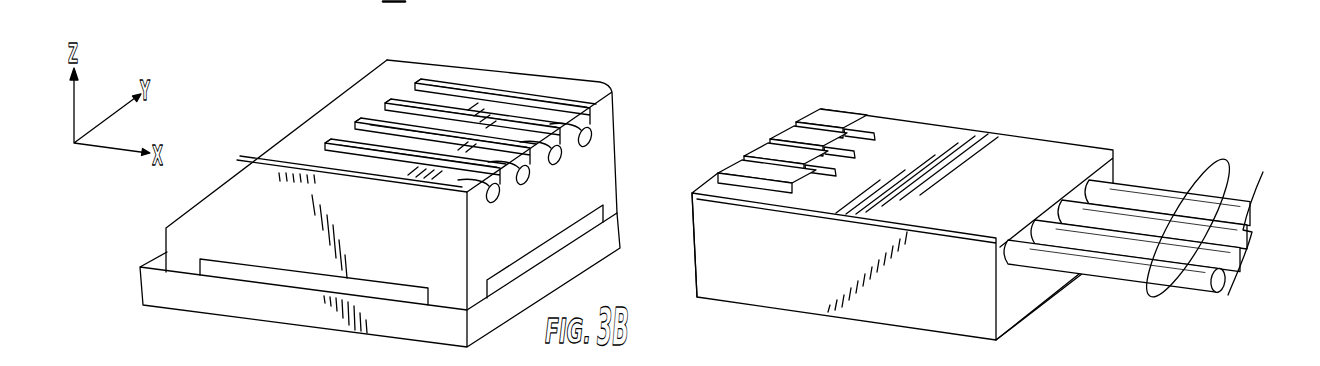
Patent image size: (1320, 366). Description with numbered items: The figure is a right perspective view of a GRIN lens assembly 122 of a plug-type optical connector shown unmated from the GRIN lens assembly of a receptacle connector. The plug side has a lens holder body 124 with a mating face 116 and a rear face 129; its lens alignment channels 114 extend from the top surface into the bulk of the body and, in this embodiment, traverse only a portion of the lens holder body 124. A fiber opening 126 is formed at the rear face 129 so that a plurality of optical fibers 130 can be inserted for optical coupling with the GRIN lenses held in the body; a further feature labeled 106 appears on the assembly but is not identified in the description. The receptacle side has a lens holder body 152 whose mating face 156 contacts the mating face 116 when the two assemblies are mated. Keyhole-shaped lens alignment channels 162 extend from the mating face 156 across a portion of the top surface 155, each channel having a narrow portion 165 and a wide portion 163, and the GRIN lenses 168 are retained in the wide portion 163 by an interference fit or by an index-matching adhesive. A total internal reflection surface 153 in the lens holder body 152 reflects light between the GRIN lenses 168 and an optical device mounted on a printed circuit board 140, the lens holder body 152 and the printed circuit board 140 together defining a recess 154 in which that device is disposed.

The printed circuit board 140 is at (141, 286).
The lens holder body 152 is at (421, 64).
The total internal reflection surface 153 is at (214, 182).
The recess 154 is at (230, 272).
The top surface 155 is at (261, 150).
The mating face 156 is at (598, 160).
The lens alignment channels 162 is at (317, 137).
The wide portion 163 is at (568, 178).
The narrow portion 165 is at (475, 83).
The GRIN lenses 168 is at (470, 218).
The top surface 106 is at (1002, 190).
The lens alignment channels 114 is at (799, 182).
The mating face 116 is at (692, 278).
The GRIN lens assembly 122 is at (1051, 75).
The lens holder body 124 is at (780, 300).
The fiber opening 126 is at (1077, 198).
The rear face 129 is at (1018, 308).
The optical fibers 130 is at (1157, 298).